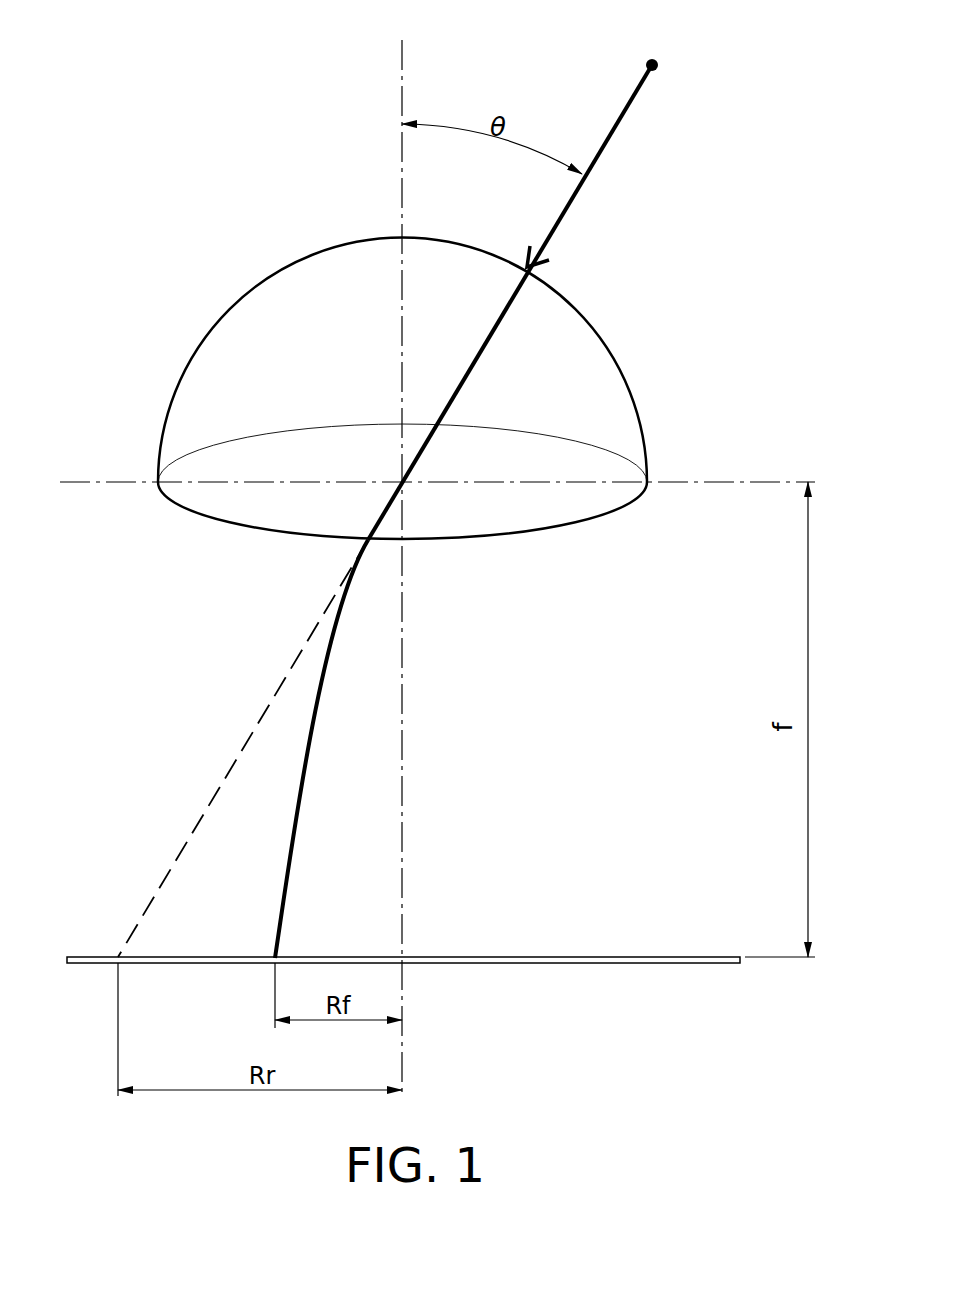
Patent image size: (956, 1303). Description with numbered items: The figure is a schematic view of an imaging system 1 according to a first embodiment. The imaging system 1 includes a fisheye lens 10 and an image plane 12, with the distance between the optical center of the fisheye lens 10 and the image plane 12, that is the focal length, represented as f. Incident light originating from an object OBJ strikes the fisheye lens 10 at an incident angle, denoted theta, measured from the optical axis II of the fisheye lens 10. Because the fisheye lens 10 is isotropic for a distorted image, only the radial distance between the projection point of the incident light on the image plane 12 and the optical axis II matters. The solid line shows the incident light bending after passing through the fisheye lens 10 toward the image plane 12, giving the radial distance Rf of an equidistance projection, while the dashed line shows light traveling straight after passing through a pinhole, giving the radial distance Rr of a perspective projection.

The imaging system 1 is at (113, 76).
The fisheye lens 10 is at (612, 352).
The image plane 12 is at (660, 958).
The object OBJ is at (650, 58).
The optical axis II is at (403, 741).